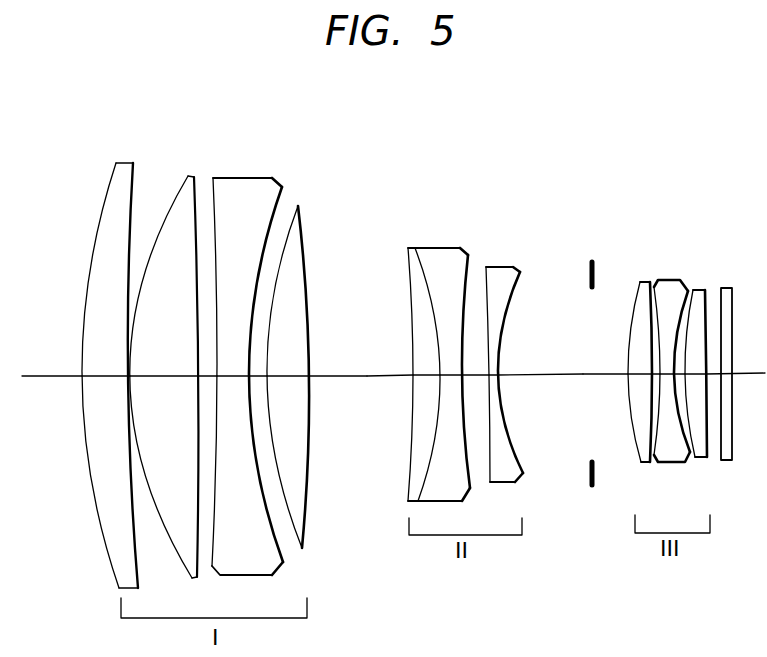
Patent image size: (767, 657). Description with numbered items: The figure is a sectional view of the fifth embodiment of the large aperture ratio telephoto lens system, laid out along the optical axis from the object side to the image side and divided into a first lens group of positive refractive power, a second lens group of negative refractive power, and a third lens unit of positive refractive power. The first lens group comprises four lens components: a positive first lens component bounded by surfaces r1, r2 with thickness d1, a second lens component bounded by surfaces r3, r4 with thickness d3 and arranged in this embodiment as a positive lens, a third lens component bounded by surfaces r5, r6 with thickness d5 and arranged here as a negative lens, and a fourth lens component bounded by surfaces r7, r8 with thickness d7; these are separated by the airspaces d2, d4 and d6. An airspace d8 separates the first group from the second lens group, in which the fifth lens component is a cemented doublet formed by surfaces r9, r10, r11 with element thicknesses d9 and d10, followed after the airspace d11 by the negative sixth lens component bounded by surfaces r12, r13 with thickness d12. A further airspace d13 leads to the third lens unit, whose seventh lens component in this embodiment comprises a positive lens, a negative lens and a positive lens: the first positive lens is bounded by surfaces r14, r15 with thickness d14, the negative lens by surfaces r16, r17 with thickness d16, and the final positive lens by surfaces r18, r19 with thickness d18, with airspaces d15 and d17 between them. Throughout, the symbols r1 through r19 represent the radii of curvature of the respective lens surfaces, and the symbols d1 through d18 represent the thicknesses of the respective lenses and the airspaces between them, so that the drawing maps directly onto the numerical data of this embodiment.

The radius of curvature of first lens surface r1 is at (104, 182).
The radius of curvature of second lens surface r2 is at (135, 170).
The radius of curvature of third lens surface r3 is at (185, 178).
The radius of curvature of fourth lens surface r4 is at (195, 182).
The radius of curvature of fifth lens surface r5 is at (212, 182).
The radius of curvature of sixth lens surface r6 is at (283, 188).
The radius of curvature of seventh lens surface r7 is at (297, 207).
The radius of curvature of eighth lens surface r8 is at (305, 232).
The radius of curvature of ninth lens surface r9 is at (407, 260).
The radius of curvature of tenth lens surface r10 is at (418, 250).
The radius of curvature of eleventh lens surface r11 is at (462, 256).
The radius of curvature of twelfth lens surface r12 is at (487, 270).
The radius of curvature of thirteenth lens surface r13 is at (522, 278).
The radius of curvature of fourteenth lens surface r14 is at (636, 290).
The radius of curvature of fifteenth lens surface r15 is at (650, 285).
The radius of curvature of sixteenth lens surface r16 is at (656, 285).
The radius of curvature of seventeenth lens surface r17 is at (683, 292).
The radius of curvature of eighteenth lens surface r18 is at (696, 293).
The radius of curvature of nineteenth lens surface r19 is at (708, 292).
The thickness of first lens d1 is at (100, 380).
The airspace between first and second lens components d2 is at (128, 376).
The thickness of second lens d3 is at (170, 380).
The airspace between second and third lens components d4 is at (198, 376).
The thickness of third lens d5 is at (232, 380).
The airspace between third and fourth lens components d6 is at (258, 376).
The thickness of fourth lens d7 is at (286, 380).
The airspace between first and second lens groups d8 is at (367, 380).
The thickness of first element of fifth lens component d9 is at (425, 375).
The thickness of second element of fifth lens component d10 is at (450, 378).
The airspace between fifth and sixth lens components d11 is at (480, 378).
The thickness of sixth lens d12 is at (493, 378).
The airspace between second lens group and third lens unit d13 is at (584, 378).
The thickness of first positive lens of seventh lens component d14 is at (640, 372).
The airspace between positive and negative lenses of seventh lens component d15 is at (656, 378).
The thickness of negative lens of seventh lens component d16 is at (667, 378).
The airspace between negative and final positive lenses of seventh lens component d17 is at (680, 378).
The thickness of final positive lens of seventh lens component d18 is at (700, 378).